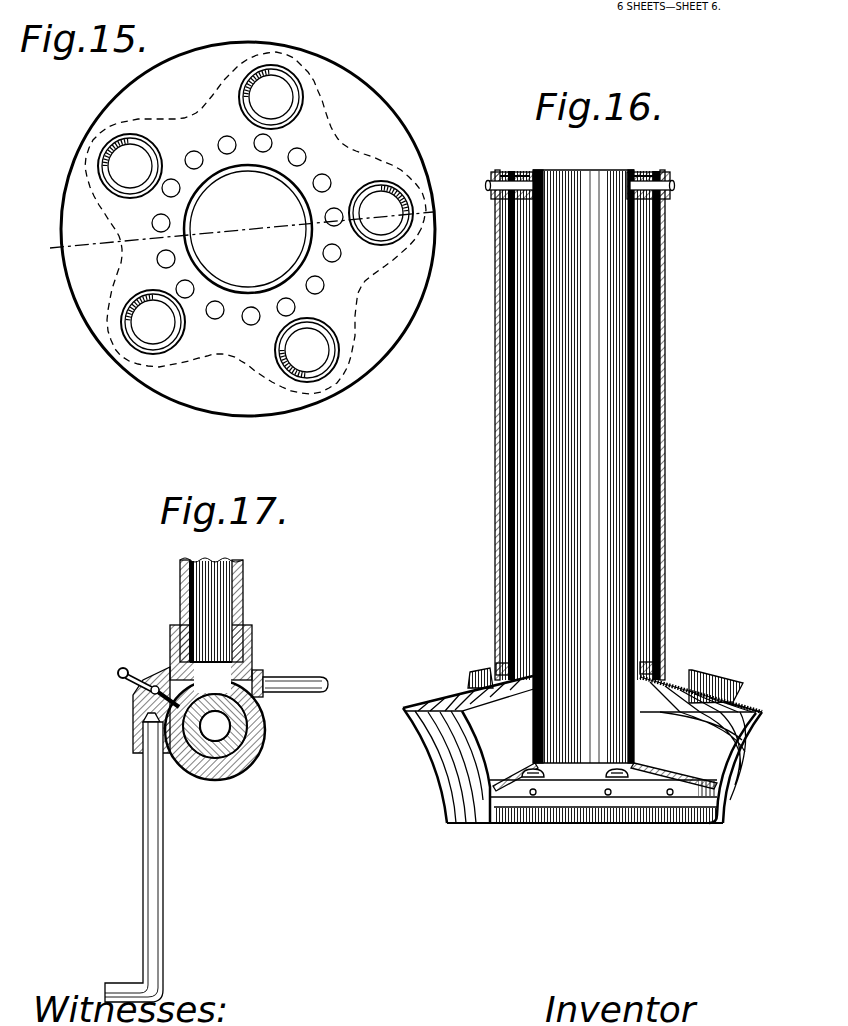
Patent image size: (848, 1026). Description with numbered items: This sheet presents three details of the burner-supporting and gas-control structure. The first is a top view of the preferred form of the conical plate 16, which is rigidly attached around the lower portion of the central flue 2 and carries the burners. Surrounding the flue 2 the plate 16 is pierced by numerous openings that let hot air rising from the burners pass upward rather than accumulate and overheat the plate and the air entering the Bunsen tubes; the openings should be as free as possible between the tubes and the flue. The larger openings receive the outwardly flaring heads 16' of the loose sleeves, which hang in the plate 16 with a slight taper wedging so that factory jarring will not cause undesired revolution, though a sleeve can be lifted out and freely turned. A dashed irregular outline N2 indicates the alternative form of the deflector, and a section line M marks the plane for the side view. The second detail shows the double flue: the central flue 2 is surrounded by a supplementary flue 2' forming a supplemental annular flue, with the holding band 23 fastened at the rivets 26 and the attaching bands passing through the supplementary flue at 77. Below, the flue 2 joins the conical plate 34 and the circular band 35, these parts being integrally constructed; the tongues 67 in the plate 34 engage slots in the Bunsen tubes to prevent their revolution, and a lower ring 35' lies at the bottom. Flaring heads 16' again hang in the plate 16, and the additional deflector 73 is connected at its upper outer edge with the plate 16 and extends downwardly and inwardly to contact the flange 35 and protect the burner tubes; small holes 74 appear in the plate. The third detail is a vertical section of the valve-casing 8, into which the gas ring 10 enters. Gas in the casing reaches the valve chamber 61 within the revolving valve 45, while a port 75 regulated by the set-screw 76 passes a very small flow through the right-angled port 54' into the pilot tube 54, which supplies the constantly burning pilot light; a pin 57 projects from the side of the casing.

In FIG. 15, the flue 2 is at (248, 229).
In FIG. 16, the flue 2 is at (619, 466).
In FIG. 16, the supplementary flue 2' is at (600, 425).
In FIG. 17, the valve-casing 8 is at (266, 723).
In FIG. 17, the gas ring 10 is at (181, 584).
In FIG. 15, the conical plate 16 is at (248, 229).
In FIG. 16, the conical plate 16 is at (581, 746).
In FIG. 15, the flaring head of sleeve 16' is at (229, 232).
In FIG. 16, the flaring head of sleeve 16' is at (599, 673).
In FIG. 16, the band 23 is at (497, 160).
In FIG. 16, the rivet fastening 26 is at (675, 187).
In FIG. 16, the conical plate 34 is at (661, 768).
In FIG. 16, the band 35 is at (603, 825).
In FIG. 16, the lower plate ring 35' is at (605, 837).
In FIG. 17, the revolving valve 45 is at (240, 742).
In FIG. 17, the pilot tube 54 is at (129, 857).
In FIG. 17, the right-angled port 54' is at (121, 710).
In FIG. 17, the pin 57 is at (297, 676).
In FIG. 17, the valve chamber opening 61 is at (217, 740).
In FIG. 16, the tongue 67 is at (528, 782).
In FIG. 16, the additional deflector 73 is at (446, 783).
In FIG. 15, the holes 74 is at (218, 137).
In FIG. 16, the holes 74 is at (503, 664).
In FIG. 17, the port 75 is at (172, 668).
In FIG. 17, the set-screw 76 is at (121, 668).
In FIG. 16, the band passage through supplementary flue 77 is at (517, 173).
In FIG. 15, the section line M— M is at (238, 231).
In FIG. 16, the section line M— M is at (442, 212).
In FIG. 15, the lobed outline N2 is at (322, 90).